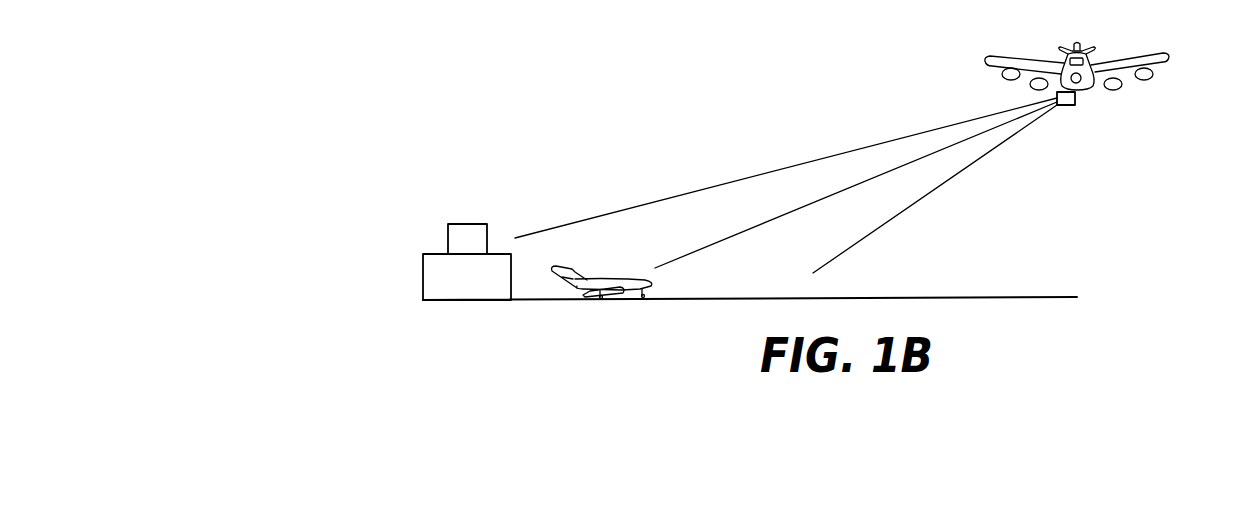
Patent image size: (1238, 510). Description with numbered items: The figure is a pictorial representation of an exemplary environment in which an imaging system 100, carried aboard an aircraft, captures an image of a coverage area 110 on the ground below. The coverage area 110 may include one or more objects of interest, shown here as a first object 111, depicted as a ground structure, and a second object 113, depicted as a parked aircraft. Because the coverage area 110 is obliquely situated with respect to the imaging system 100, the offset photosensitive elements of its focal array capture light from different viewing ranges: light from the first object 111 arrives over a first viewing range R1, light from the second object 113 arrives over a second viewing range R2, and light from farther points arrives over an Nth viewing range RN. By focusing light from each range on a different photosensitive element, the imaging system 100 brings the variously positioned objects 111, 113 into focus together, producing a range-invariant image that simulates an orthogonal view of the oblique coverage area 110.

The imaging system 100 is at (1073, 106).
The coverage area 110 is at (583, 169).
The first object 111 is at (465, 223).
The second object 113 is at (613, 280).
The first viewing range R1 is at (799, 163).
The second viewing range R2 is at (842, 198).
The Nth viewing range RN is at (925, 198).